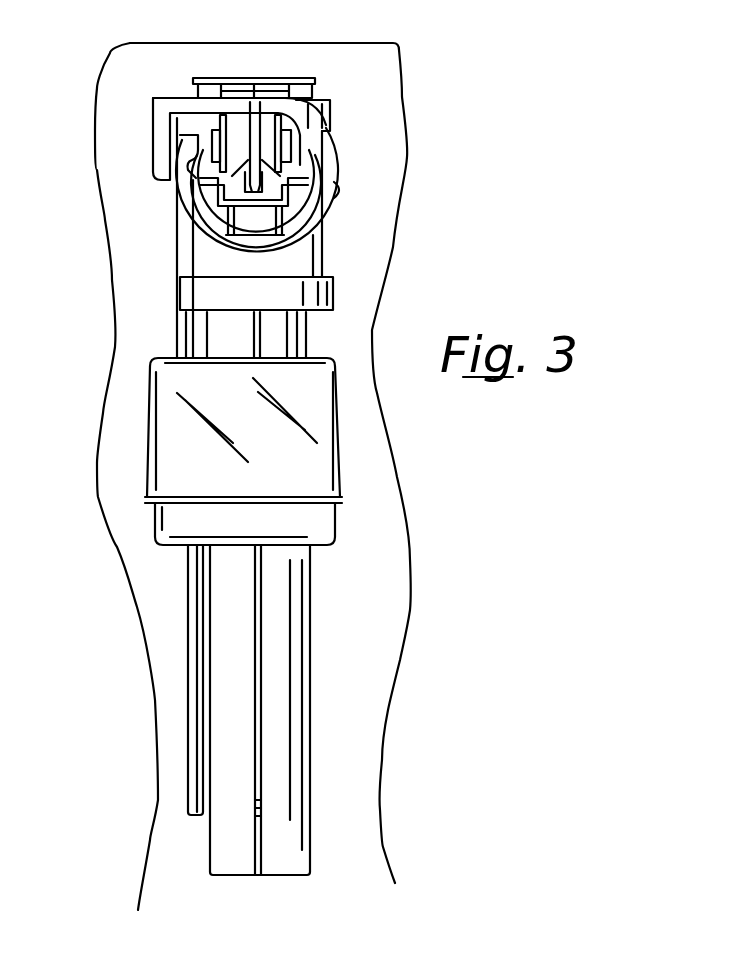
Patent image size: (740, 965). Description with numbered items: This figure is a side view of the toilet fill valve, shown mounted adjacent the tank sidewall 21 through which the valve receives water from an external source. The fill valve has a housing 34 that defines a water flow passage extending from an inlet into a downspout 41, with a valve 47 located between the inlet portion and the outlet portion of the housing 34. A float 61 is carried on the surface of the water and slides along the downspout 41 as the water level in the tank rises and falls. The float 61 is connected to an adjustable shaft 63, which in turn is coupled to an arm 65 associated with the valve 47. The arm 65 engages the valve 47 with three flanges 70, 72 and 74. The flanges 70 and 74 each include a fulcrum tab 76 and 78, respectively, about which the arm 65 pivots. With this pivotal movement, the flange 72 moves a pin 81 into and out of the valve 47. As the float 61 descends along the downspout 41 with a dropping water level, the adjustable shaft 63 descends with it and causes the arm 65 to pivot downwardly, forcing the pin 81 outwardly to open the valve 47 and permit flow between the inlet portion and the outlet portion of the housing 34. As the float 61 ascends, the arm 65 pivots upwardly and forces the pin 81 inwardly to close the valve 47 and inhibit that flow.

The sidewall 21 is at (375, 670).
The housing 34 is at (300, 262).
The downspout 41 is at (307, 613).
The valve 47 is at (352, 154).
The float 61 is at (316, 445).
The adjustable shaft 63 is at (192, 585).
The arm 65 is at (146, 128).
The flange 70 is at (215, 137).
The flange 72 is at (243, 170).
The flange 74 is at (300, 147).
The fulcrum tab 76 is at (200, 156).
The fulcrum tab 78 is at (297, 166).
The pin 81 is at (205, 212).